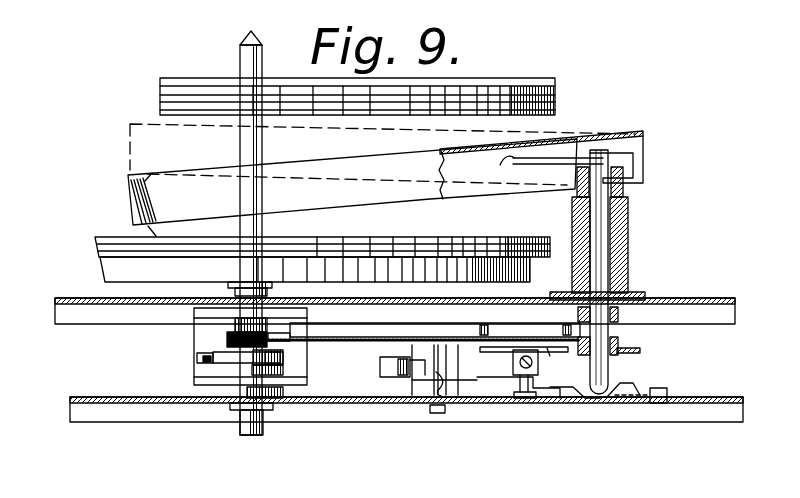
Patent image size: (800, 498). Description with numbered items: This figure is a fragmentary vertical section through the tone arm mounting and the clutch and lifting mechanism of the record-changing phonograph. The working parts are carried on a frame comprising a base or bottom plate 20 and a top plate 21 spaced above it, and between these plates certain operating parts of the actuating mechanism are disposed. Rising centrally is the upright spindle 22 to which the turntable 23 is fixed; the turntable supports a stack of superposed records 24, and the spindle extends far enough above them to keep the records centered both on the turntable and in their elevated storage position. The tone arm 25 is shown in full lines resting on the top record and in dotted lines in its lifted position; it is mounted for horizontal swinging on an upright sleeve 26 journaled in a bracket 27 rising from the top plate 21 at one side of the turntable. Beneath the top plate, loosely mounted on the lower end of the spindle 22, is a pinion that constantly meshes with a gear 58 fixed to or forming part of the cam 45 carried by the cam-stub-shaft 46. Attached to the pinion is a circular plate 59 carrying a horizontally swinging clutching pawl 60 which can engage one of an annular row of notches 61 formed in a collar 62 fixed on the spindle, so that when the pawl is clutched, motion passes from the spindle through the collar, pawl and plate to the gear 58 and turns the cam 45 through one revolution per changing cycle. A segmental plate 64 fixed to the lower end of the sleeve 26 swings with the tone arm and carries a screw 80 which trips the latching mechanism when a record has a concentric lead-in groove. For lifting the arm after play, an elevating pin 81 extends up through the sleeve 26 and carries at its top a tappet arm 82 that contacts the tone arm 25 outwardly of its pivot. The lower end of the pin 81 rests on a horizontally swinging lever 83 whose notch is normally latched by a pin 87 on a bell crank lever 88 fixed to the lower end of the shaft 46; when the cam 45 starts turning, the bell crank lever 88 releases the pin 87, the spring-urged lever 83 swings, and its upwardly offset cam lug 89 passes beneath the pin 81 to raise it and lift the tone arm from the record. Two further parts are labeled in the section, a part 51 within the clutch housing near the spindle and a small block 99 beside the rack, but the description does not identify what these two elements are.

The base or bottom plate 20 is at (105, 398).
The top plate 21 is at (93, 318).
The upright spindle 22 is at (263, 140).
The turntable 23 is at (315, 274).
The records 24 is at (560, 110).
The tone arm 25 is at (381, 180).
The upright sleeve 26 is at (612, 248).
The bracket 27 is at (629, 216).
The cam 45 is at (481, 328).
The cam-stub-shaft 46 is at (433, 400).
The pinion 51 is at (227, 340).
The gear 58 is at (377, 340).
The circular plate 59 is at (196, 349).
The clutching pawl 60 is at (200, 366).
The notches 61 is at (272, 365).
The collar 62 is at (243, 358).
The segmental plate 64 is at (593, 365).
The screw 80 is at (513, 363).
The elevating pin 81 is at (609, 372).
The tappet arm 82 is at (518, 156).
The lever 83 is at (614, 405).
The pin 87 is at (518, 384).
The bell crank lever 88 is at (443, 374).
The elevating cam or upwardly-offset lug 89 is at (564, 388).
The contact block 99 is at (382, 368).